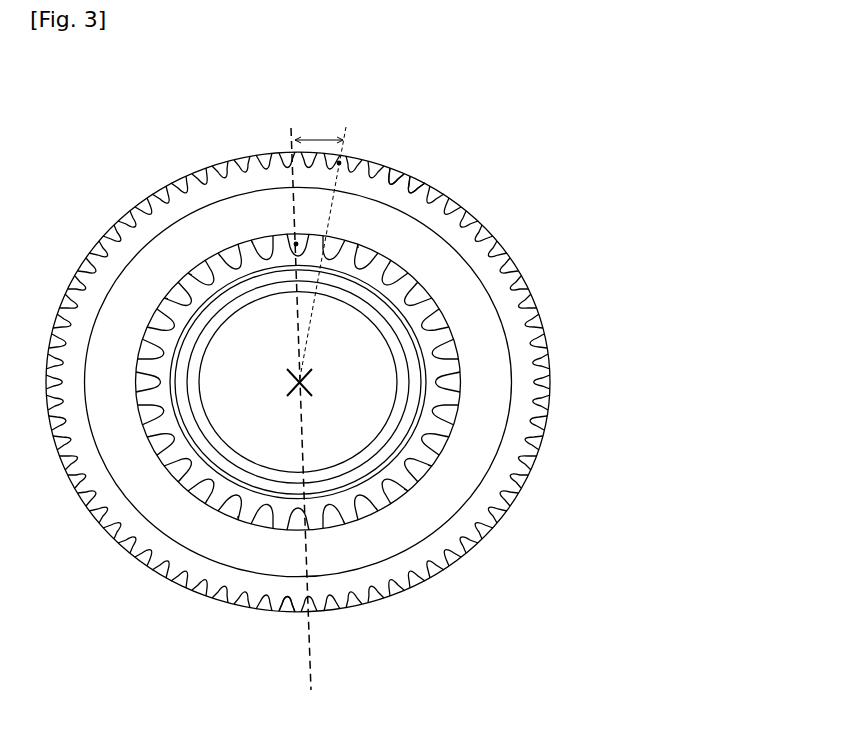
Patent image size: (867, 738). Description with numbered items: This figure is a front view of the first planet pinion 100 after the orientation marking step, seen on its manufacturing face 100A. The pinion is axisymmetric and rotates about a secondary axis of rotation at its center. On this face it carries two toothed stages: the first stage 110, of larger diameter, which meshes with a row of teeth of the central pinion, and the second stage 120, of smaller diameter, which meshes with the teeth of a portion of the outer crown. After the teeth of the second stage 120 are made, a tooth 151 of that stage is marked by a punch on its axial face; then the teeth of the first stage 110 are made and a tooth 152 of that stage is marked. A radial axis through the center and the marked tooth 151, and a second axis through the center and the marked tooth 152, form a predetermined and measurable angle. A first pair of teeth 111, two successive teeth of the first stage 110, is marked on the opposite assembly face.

The first planet pinion 100 is at (523, 185).
The manufacturing face 100A is at (405, 183).
The first stage 110 is at (143, 228).
The first pair of teeth 111 is at (303, 612).
The second stage 120 is at (183, 316).
The marked tooth of the second stage 151 is at (298, 244).
The marked tooth of the first stage 152 is at (340, 163).